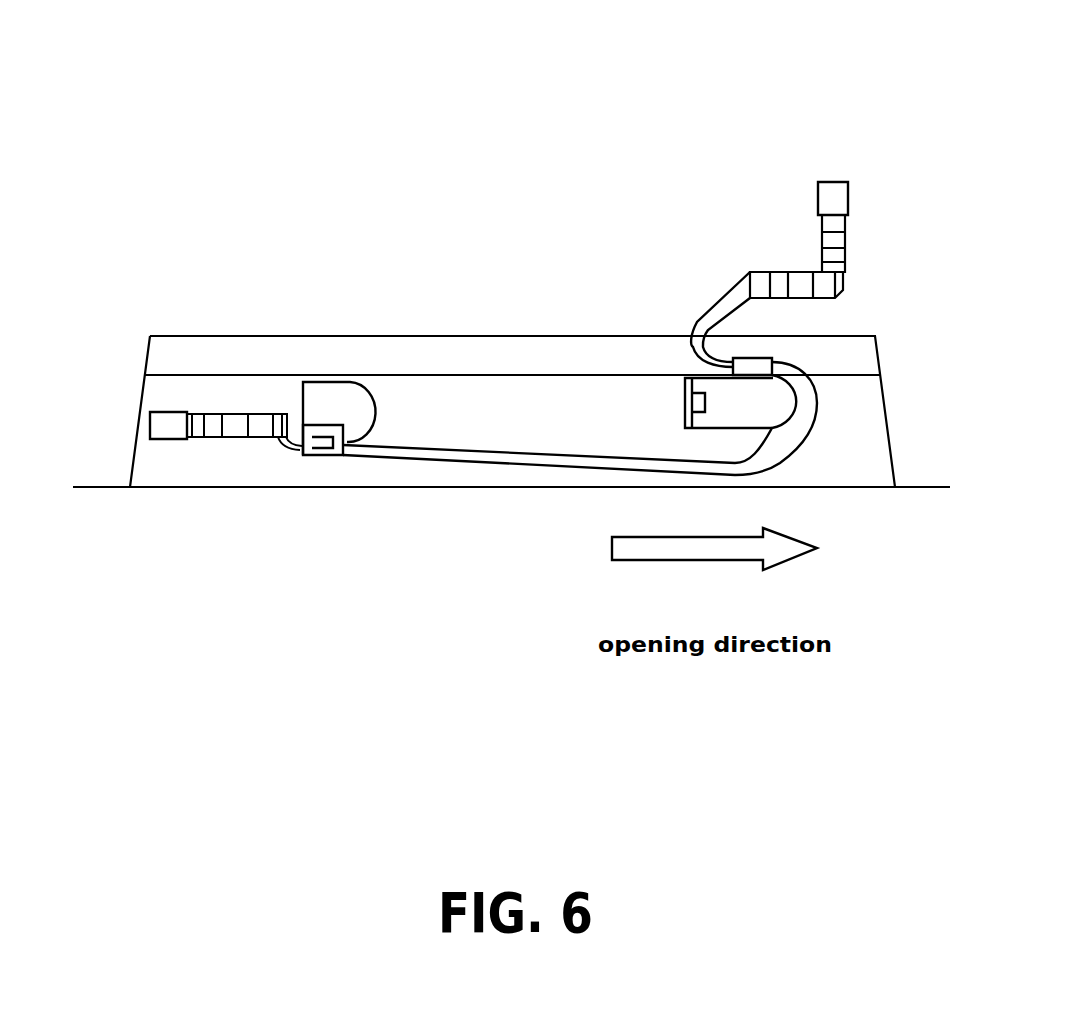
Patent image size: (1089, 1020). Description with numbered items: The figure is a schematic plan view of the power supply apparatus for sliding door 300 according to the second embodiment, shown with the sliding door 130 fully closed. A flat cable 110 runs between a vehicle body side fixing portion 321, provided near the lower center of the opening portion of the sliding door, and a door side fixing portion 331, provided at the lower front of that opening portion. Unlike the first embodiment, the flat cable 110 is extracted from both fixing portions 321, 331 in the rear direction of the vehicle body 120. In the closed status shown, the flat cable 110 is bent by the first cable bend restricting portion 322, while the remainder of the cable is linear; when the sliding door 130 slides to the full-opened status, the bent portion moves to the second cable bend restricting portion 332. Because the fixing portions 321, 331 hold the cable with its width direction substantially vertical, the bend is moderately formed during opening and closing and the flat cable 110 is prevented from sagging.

The power supply apparatus for sliding door 300 is at (490, 152).
The vehicle body 120 is at (318, 335).
The sliding door 130 is at (242, 488).
The flat cable 110 is at (577, 453).
The vehicle body side fixing portion 321 is at (757, 362).
The first cable bend restricting portion 322 is at (783, 402).
The door side fixing portion 331 is at (320, 453).
The second cable bend restricting portion 332 is at (357, 423).